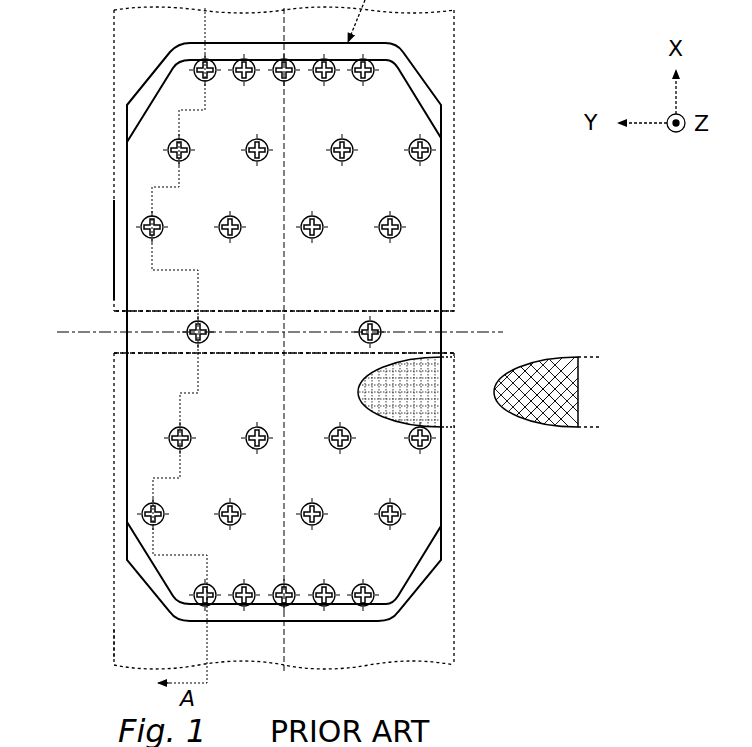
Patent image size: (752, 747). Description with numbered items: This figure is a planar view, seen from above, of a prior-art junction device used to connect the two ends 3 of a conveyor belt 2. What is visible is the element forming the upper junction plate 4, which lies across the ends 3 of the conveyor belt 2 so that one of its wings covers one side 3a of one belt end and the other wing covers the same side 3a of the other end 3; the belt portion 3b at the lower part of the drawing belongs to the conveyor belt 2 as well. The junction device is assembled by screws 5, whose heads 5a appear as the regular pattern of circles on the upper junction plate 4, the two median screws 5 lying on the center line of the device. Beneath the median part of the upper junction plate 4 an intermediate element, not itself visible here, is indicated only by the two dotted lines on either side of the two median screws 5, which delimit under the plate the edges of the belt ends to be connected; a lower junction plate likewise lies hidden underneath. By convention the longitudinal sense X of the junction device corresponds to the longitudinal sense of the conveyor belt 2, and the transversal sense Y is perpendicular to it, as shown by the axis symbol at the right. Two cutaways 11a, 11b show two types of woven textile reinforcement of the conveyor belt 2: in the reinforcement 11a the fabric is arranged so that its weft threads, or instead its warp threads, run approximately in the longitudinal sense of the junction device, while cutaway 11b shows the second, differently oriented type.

The conveyor belt 2 is at (440, 36).
The ends of the conveyor belt 3 is at (112, 220).
The side of the conveyor belt end 3a is at (120, 270).
The frame bottom portion 3b is at (152, 637).
The upper junction plate 4 is at (420, 258).
The screws 5 is at (440, 140).
The heads of the screws 5a is at (428, 162).
The cutaway showing textile reinforcement 11a is at (447, 428).
The cutaway showing textile reinforcement 11b is at (550, 360).